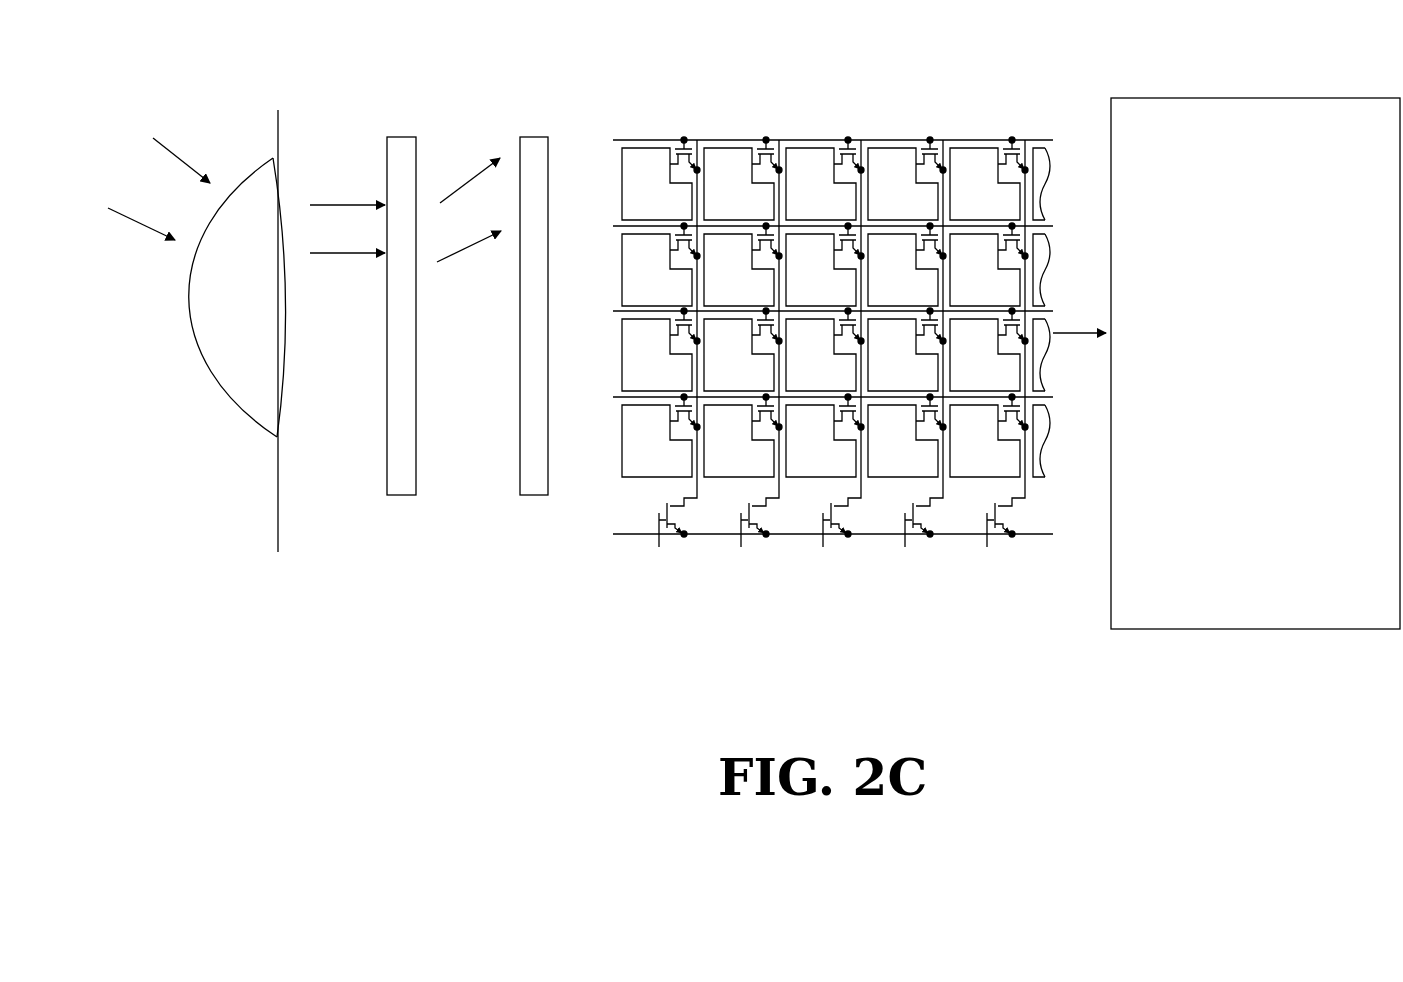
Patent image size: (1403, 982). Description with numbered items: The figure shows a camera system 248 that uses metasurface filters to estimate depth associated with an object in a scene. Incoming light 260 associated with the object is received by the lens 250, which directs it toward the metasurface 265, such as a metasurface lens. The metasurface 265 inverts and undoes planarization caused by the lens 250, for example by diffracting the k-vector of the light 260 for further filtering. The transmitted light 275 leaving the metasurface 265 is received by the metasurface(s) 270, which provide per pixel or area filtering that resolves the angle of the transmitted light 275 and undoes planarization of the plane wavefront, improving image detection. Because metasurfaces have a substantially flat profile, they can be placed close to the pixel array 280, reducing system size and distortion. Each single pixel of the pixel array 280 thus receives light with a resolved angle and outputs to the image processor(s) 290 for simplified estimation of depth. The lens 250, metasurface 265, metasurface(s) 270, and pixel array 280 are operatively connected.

The camera system 248 is at (238, 614).
The lens 250 is at (207, 373).
The light 260 is at (350, 203).
The metasurface 265 is at (398, 497).
The metasurface(s) 270 is at (535, 497).
The transmitted light 275 is at (472, 180).
The pixel array 280 is at (1000, 538).
The image processor(s) 290 is at (1312, 631).